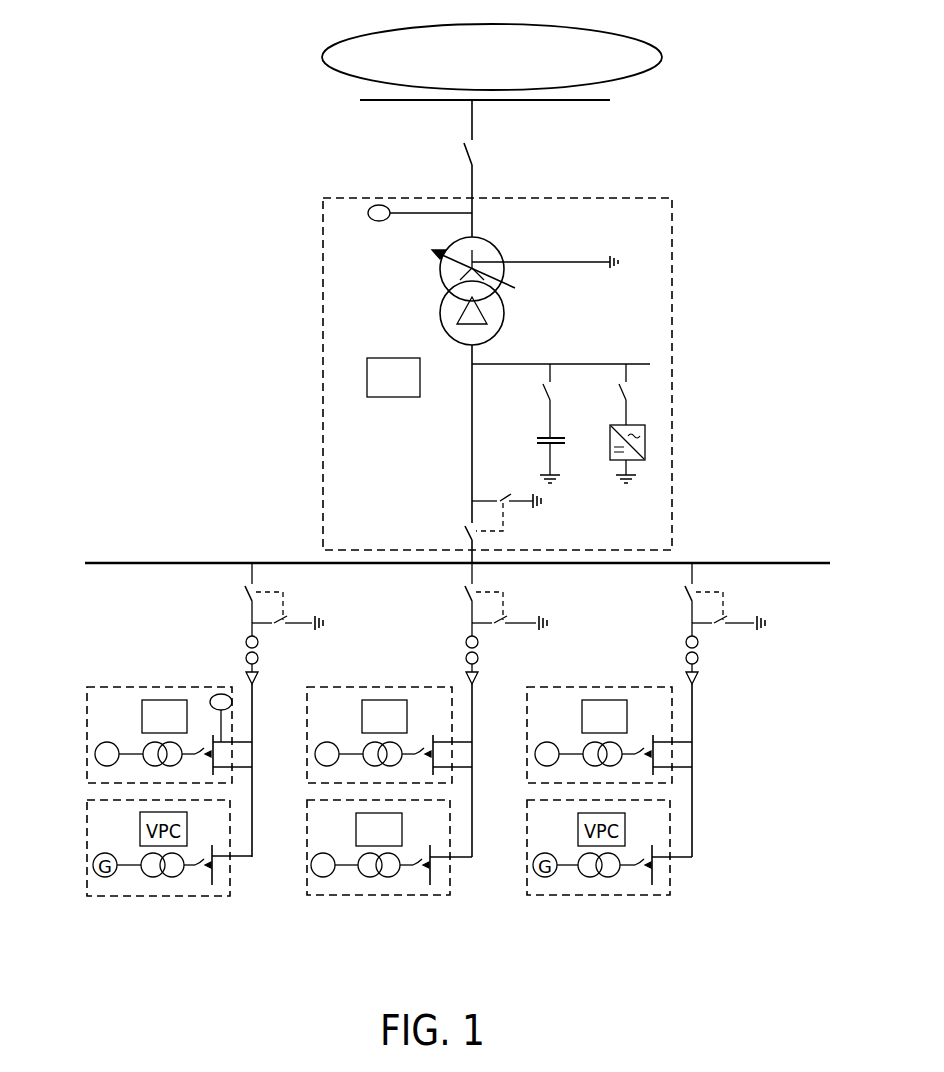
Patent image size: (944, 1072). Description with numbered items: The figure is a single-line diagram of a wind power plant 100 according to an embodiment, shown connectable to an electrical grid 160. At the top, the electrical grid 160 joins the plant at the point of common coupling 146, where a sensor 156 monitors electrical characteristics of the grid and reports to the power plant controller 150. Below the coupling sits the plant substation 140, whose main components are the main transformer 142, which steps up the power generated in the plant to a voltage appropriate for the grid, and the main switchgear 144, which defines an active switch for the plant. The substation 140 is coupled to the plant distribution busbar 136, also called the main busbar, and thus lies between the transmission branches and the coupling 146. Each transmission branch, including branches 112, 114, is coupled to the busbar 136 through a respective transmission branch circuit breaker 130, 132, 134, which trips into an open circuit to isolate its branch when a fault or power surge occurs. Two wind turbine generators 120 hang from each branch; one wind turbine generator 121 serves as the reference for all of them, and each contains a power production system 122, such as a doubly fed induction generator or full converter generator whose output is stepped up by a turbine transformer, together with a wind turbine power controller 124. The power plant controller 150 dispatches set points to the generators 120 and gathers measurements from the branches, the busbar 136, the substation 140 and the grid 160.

The wind power plant 100 is at (222, 180).
The electrical grid 160 is at (628, 33).
The point of common coupling 146 is at (583, 103).
The measurement sensor 156 is at (377, 205).
The main transformer 142 is at (436, 272).
The plant substation 140 is at (675, 244).
The power plant controller 150 is at (366, 372).
The main switchgear 144 is at (478, 512).
The plant distribution busbar 136 is at (782, 562).
The transmission branch circuit breaker 130 is at (251, 613).
The transmission branch circuit breaker 132 is at (472, 608).
The transmission branch circuit breaker 134 is at (692, 608).
The transmission branch 112 is at (380, 679).
The transmission branch 114 is at (595, 679).
The wind turbine generators 120 is at (322, 910).
The wind turbine generator 121 is at (137, 727).
The power production system 122 is at (108, 741).
The wind turbine power controller 124 is at (157, 699).